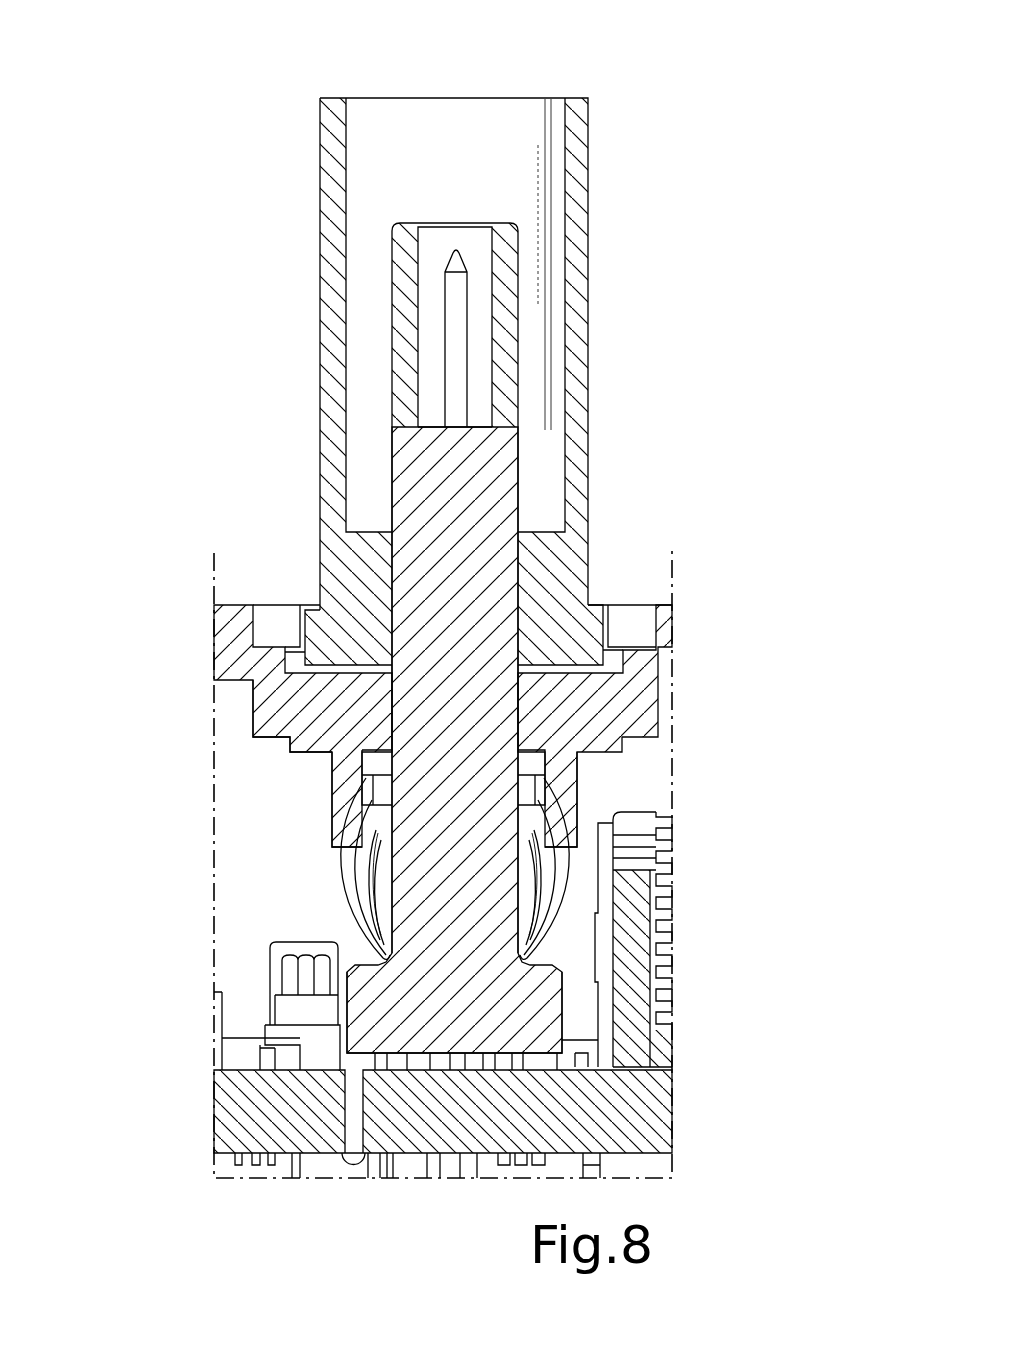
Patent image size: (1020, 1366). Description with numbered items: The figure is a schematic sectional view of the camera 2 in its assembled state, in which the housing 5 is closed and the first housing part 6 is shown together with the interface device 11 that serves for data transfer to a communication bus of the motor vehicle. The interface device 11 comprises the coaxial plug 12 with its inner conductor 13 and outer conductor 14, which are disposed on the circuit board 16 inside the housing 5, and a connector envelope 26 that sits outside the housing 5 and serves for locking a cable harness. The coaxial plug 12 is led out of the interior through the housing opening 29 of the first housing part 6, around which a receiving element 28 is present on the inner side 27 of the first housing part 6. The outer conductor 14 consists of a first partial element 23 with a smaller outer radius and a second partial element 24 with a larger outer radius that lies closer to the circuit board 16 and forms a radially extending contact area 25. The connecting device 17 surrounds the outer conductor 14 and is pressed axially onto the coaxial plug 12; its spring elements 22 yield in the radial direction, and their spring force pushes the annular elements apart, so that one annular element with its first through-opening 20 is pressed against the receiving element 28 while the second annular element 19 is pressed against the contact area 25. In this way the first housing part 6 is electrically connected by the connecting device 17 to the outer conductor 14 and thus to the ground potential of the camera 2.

The camera 2 is at (390, 1195).
The housing 5 is at (190, 632).
The first housing part 6 is at (643, 668).
The interface device 11 is at (533, 88).
The coaxial plug 12 is at (524, 306).
The inner conductor 13 is at (455, 297).
The outer conductor 14 is at (500, 576).
The circuit board 16 is at (625, 1125).
The connecting device 17 is at (568, 863).
The second annular element 19 is at (381, 963).
The first through-opening 20 is at (465, 755).
The spring elements 22 is at (560, 897).
The first partial element 23 is at (519, 460).
The second partial element 24 is at (566, 1010).
The contact area 25 is at (553, 953).
The connector envelope 26 is at (575, 308).
The inner side 27 is at (280, 743).
The receiving element 28 is at (335, 803).
The housing opening 29 is at (528, 655).